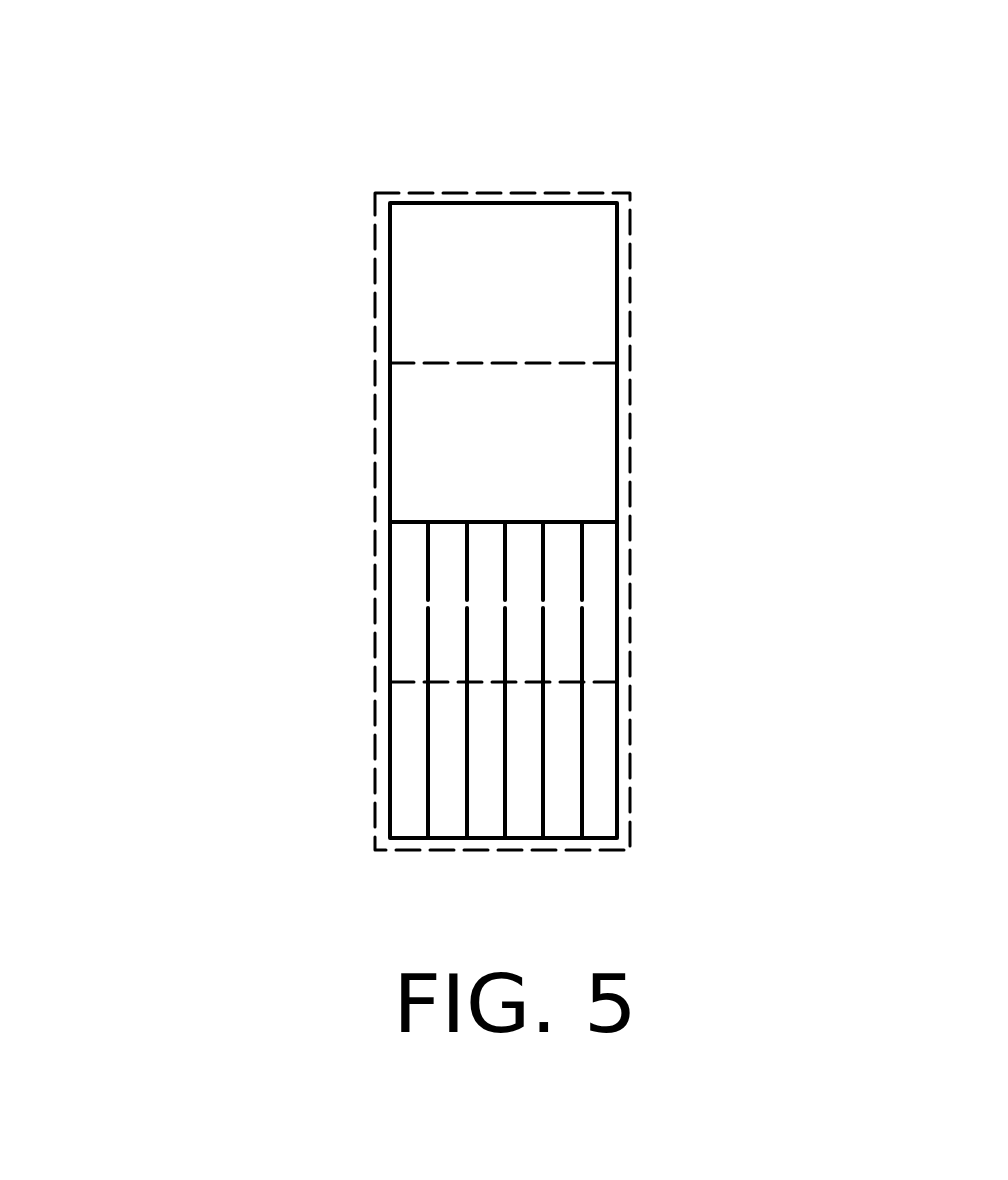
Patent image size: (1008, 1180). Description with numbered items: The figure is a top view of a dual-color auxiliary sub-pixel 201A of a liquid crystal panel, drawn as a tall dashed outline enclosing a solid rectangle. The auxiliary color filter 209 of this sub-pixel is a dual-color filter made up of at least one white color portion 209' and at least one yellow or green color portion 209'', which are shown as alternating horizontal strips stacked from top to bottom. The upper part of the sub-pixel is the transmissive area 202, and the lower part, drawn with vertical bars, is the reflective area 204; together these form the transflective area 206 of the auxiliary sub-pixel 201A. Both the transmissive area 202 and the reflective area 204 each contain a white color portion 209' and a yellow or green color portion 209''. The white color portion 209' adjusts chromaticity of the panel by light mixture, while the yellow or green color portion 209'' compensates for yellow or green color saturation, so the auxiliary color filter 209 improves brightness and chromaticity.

The auxiliary sub-pixel 201A is at (505, 203).
The transmissive area 202 is at (580, 470).
The reflective area 204 is at (580, 632).
The transflective area 206 is at (815, 458).
The auxiliary color filter 209 is at (75, 521).
The white color portion 209' is at (383, 437).
The yellow or green color portion 209'' is at (383, 606).